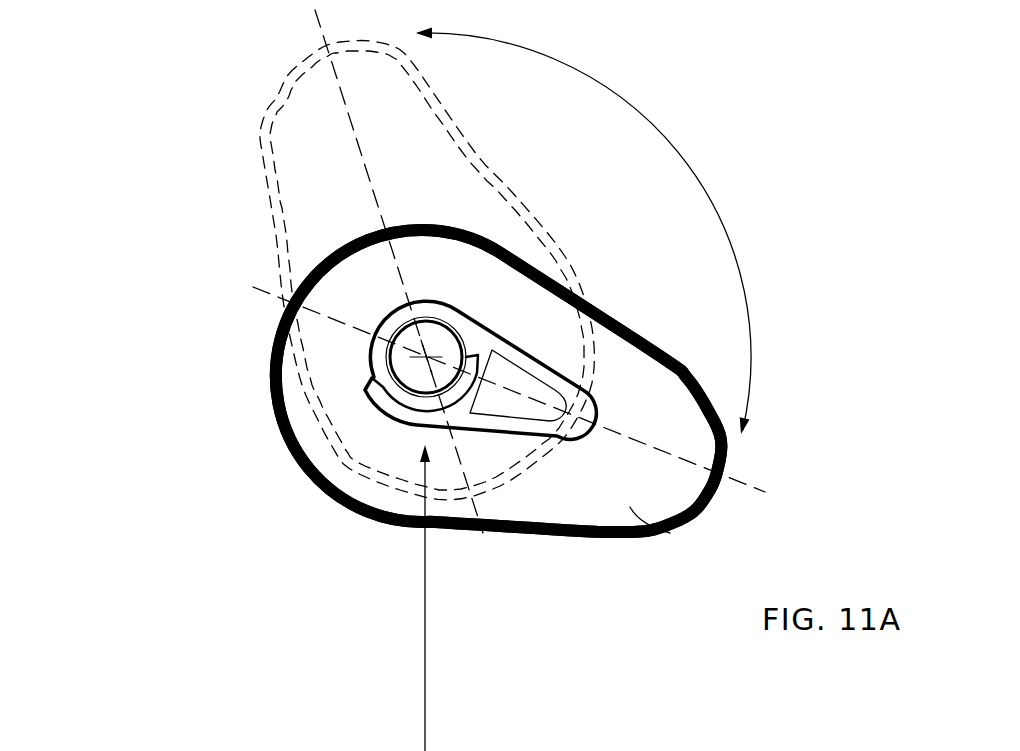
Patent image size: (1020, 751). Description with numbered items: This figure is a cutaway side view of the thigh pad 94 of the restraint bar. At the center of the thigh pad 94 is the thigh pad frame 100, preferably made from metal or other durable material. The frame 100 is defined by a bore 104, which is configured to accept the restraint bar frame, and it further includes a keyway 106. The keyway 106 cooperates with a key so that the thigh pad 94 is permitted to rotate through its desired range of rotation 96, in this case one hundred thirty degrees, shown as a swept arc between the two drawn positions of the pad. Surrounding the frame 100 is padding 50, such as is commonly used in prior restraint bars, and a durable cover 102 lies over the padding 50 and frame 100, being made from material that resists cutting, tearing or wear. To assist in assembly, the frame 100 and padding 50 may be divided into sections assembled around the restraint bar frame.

The padding 50 is at (673, 533).
The thigh pad 94 is at (232, 459).
The range of rotation 96 is at (600, 63).
The thigh pad frame 100 is at (560, 378).
The cover 102 is at (360, 512).
The bore 104 is at (393, 331).
The keyway 106 is at (490, 375).